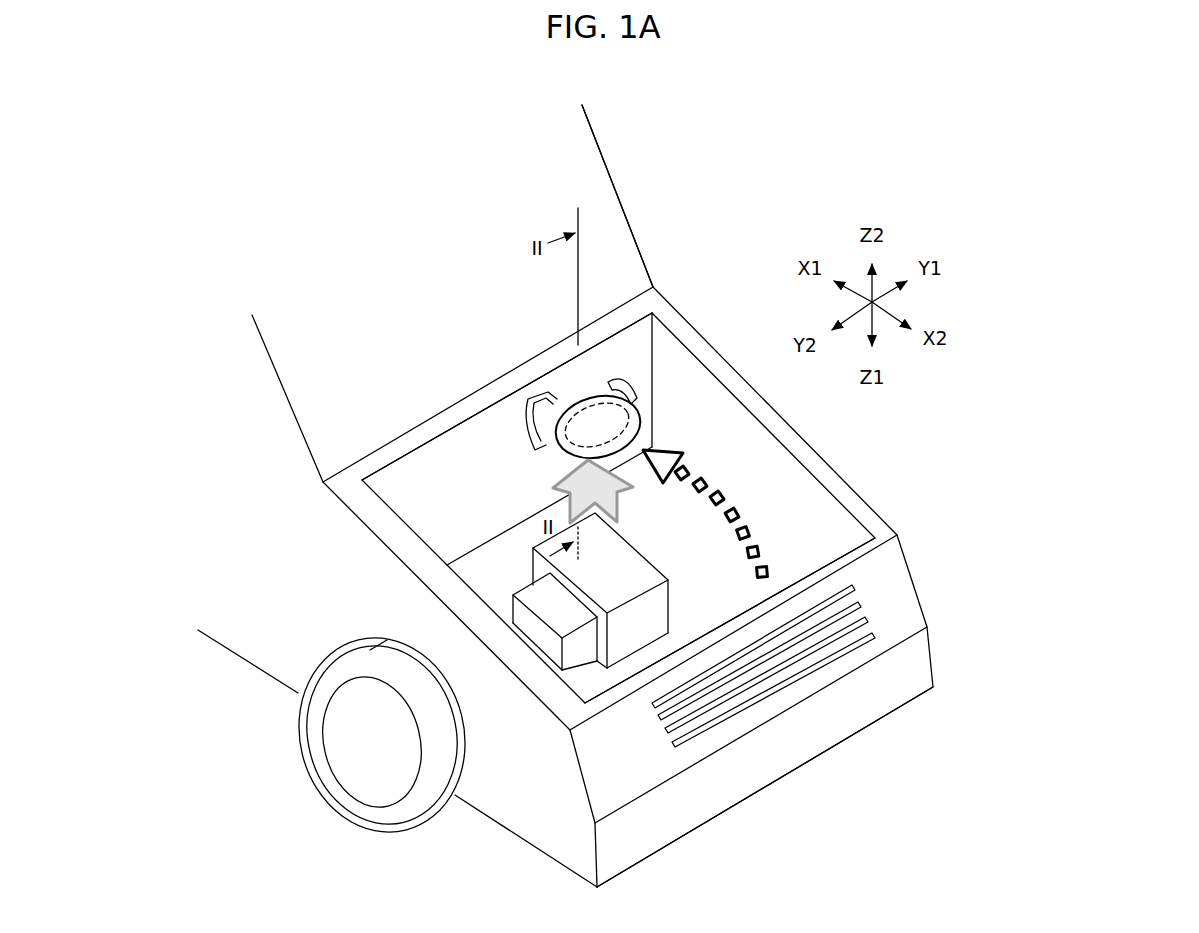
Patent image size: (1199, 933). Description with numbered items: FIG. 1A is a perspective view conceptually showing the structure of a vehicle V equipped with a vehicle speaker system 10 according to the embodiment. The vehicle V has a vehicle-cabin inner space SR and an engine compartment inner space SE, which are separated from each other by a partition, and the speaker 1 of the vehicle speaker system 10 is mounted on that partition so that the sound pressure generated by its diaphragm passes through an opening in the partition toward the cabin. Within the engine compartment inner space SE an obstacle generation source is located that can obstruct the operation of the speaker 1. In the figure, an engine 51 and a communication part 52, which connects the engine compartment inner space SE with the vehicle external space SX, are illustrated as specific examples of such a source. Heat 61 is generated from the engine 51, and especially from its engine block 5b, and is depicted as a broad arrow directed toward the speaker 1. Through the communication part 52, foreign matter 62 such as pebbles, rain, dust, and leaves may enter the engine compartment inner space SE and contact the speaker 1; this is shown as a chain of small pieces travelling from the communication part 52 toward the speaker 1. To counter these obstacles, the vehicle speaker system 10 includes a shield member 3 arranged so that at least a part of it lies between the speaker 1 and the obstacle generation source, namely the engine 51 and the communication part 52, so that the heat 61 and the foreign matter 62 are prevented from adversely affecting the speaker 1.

The speaker 1 is at (625, 410).
The shield member 3 is at (560, 433).
The vehicle speaker system 10 is at (571, 374).
The engine 51 is at (552, 582).
The communication part 52 is at (868, 620).
The engine block 5b is at (662, 597).
The heat 61 is at (568, 465).
The foreign matter 62 is at (722, 496).
The vehicle V is at (687, 258).
The vehicle-cabin inner space SR is at (413, 316).
The engine compartment inner space SE is at (656, 538).
The vehicle external space SX is at (900, 793).